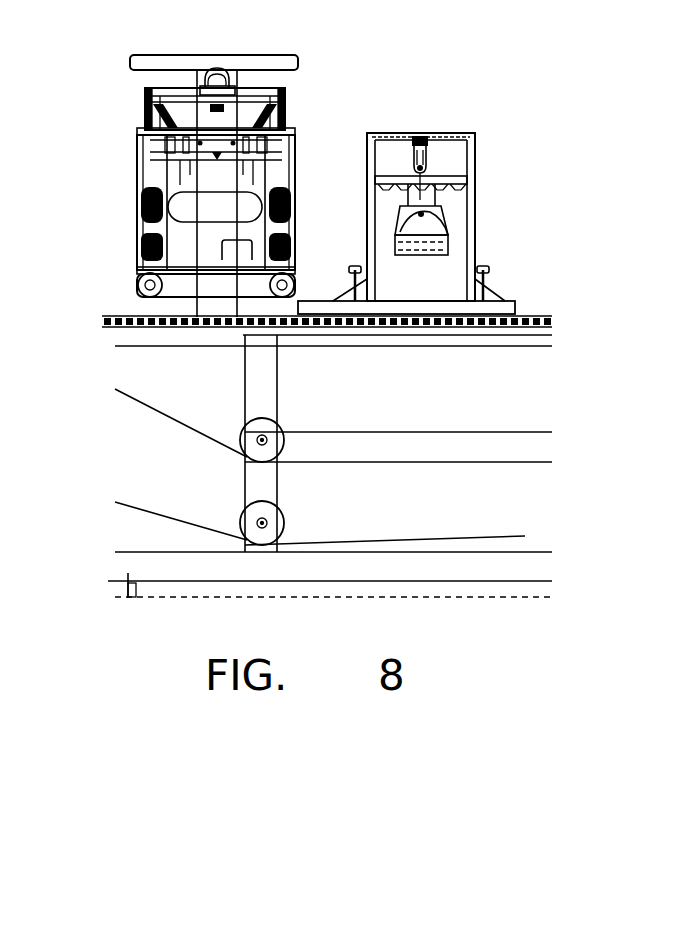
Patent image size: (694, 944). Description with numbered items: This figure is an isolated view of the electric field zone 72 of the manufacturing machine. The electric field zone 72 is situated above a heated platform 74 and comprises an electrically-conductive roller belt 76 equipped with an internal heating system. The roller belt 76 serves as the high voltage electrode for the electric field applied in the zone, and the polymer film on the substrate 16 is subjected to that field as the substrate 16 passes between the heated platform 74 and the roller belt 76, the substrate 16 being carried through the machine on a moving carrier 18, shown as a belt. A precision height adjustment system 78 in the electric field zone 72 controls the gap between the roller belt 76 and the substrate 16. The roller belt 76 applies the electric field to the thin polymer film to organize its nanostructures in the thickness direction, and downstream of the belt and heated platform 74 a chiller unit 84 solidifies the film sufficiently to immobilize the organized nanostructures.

The precision height adjustment system 78 is at (302, 104).
The electric field zone 72 is at (447, 105).
The chiller unit 84 is at (476, 210).
The heated platform 74 is at (445, 325).
The substrate 16 is at (531, 318).
The roller belt 76 is at (282, 298).
The moving carrier 18 is at (537, 463).